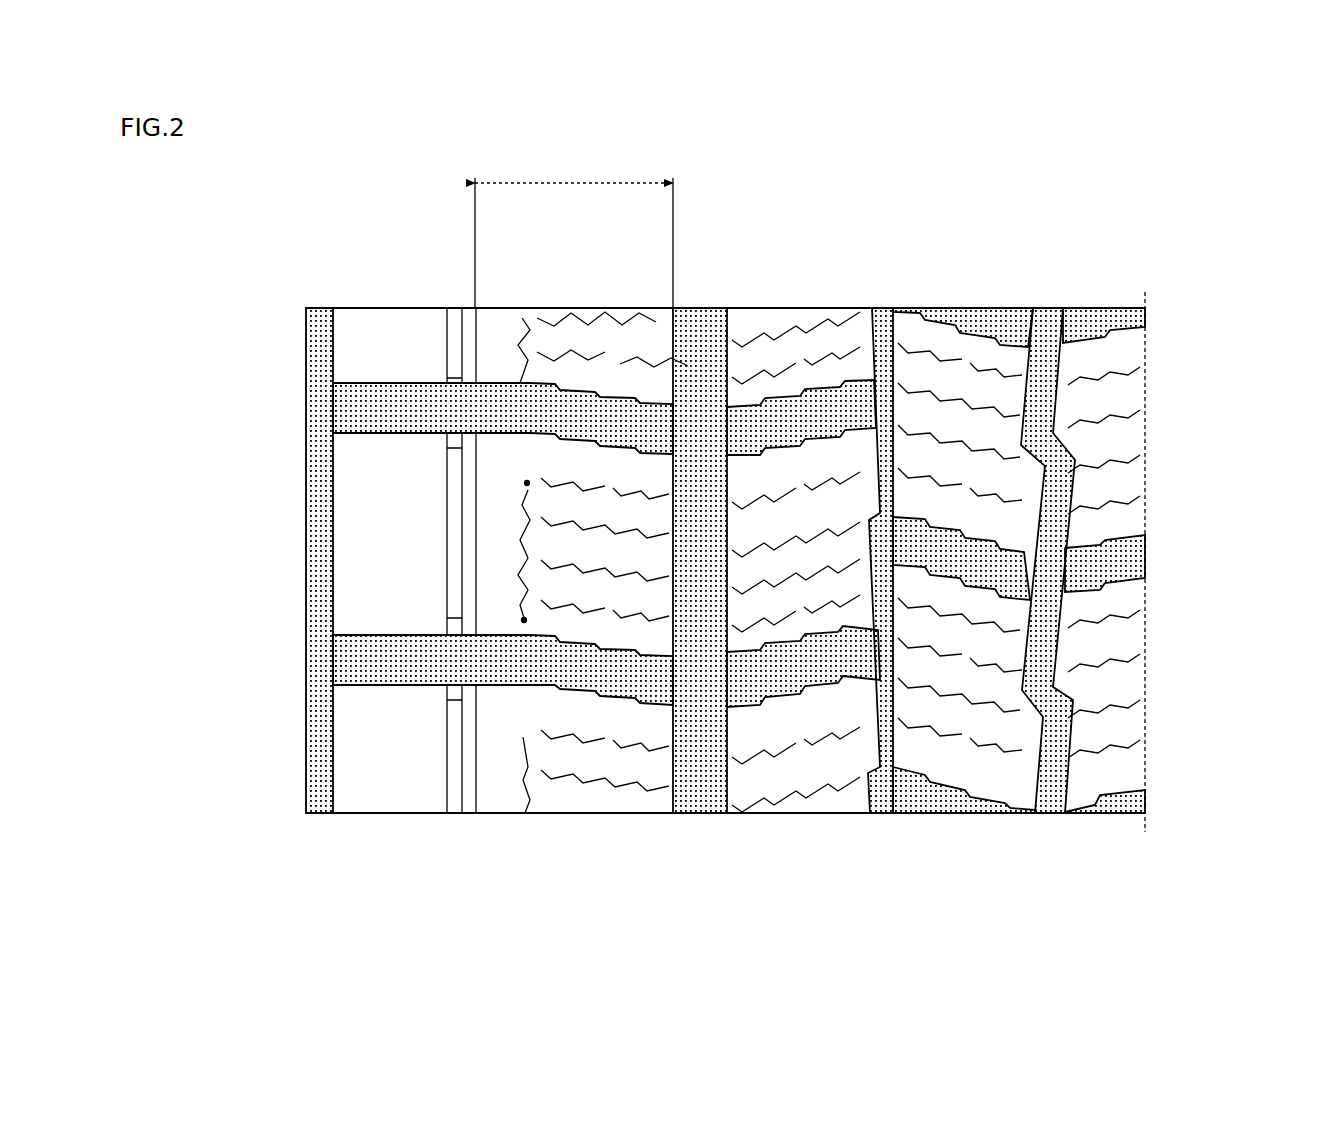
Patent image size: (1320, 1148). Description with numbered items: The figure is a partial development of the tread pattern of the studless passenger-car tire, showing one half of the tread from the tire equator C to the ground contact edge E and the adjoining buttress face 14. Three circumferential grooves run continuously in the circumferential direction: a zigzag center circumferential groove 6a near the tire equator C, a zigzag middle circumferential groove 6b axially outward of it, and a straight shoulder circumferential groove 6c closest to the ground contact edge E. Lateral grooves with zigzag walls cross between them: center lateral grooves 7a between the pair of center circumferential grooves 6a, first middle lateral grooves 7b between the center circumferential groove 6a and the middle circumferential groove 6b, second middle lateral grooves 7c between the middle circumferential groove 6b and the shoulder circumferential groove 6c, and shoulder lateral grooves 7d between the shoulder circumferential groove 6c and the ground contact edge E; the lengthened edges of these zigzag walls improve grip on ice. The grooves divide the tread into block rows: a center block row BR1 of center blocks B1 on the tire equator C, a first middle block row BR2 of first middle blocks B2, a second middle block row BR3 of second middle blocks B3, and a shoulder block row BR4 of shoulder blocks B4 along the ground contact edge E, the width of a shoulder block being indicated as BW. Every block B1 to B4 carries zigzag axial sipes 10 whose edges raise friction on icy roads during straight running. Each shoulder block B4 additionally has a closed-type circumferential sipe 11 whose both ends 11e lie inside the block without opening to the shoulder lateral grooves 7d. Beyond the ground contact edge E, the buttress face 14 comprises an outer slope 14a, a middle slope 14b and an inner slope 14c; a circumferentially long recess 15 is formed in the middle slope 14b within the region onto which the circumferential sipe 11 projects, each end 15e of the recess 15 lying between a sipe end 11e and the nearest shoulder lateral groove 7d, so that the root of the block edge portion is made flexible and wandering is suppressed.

The shoulder circumferential groove 6c is at (703, 330).
The middle circumferential groove 6b is at (880, 330).
The center circumferential groove 6a is at (1046, 330).
The center lateral groove 7a is at (1120, 320).
The first middle lateral groove 7b is at (990, 568).
The second middle lateral groove 7c is at (826, 665).
The shoulder lateral groove 7d is at (420, 775).
The axial sipe 10 is at (655, 305).
The circumferential sipe 11 is at (525, 355).
The end of circumferential sipe 11e is at (533, 544).
The buttress face 14 is at (212, 640).
The outer slope 14a is at (560, 668).
The middle slope 14b is at (490, 684).
The inner slope 14c is at (375, 716).
The recess 15 is at (447, 340).
The end of recess 15e is at (452, 450).
The ground contact edge E is at (470, 470).
The tire equator C is at (1147, 545).
The block width BW is at (574, 238).
The center block B1 is at (1130, 440).
The first middle block B2 is at (968, 800).
The second middle block B3 is at (752, 800).
The shoulder block B4 is at (552, 800).
The center block row BR1 is at (1120, 300).
The first middle block row BR2 is at (977, 300).
The second middle block row BR3 is at (810, 300).
The shoulder block row BR4 is at (585, 298).